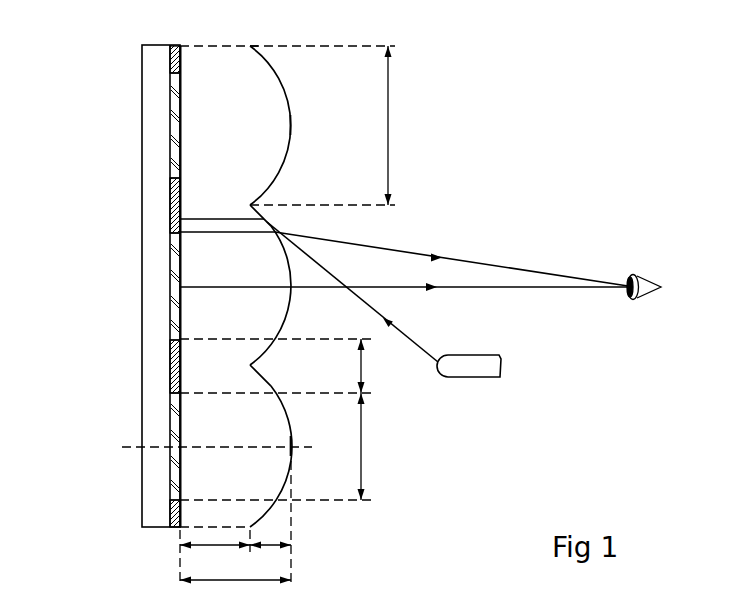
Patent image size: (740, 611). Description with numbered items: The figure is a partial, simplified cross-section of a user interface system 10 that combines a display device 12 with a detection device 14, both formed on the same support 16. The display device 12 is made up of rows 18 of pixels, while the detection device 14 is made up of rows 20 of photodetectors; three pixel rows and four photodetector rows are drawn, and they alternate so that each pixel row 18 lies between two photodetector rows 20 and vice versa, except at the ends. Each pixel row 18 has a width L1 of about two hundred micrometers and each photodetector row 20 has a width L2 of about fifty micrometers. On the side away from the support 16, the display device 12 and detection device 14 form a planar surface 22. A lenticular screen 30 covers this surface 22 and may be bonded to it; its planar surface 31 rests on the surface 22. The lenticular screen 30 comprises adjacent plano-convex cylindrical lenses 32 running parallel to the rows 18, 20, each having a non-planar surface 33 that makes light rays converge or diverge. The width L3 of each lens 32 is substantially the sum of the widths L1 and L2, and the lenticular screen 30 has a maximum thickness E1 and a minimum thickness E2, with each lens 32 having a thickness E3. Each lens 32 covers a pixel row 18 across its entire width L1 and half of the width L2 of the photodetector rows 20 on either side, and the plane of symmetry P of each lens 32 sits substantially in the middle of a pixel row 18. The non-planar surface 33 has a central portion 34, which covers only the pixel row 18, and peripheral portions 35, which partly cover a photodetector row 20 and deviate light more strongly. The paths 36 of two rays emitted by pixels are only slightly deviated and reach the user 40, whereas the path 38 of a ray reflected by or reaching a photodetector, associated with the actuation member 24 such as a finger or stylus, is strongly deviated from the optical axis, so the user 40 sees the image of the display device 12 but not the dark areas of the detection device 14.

The user interface system 10 is at (446, 92).
The display device 12 is at (191, 111).
The detection device 14 is at (160, 519).
The support 16 is at (155, 131).
The rows of pixels 18 is at (172, 149).
The rows of photodetectors 20 is at (172, 60).
The planar surface 22 is at (170, 103).
The actuation member 24 is at (477, 369).
The lenticular screen 30 is at (281, 507).
The planar surface 31 is at (183, 86).
The cylindrical lens 32 is at (301, 148).
The non-planar surface 33 is at (293, 435).
The central portion 34 is at (293, 108).
The peripheral portions 35 is at (268, 57).
The paths of light rays 36 is at (518, 269).
The path of light ray 38 is at (418, 345).
The user 40 is at (645, 297).
The plane of symmetry P is at (122, 447).
The width of pixel row L1 is at (374, 446).
The width of photodetector row L2 is at (374, 366).
The width of lens L3 is at (401, 125).
The maximum thickness E1 is at (235, 594).
The minimum thickness E2 is at (215, 558).
The lens thickness E3 is at (270, 558).